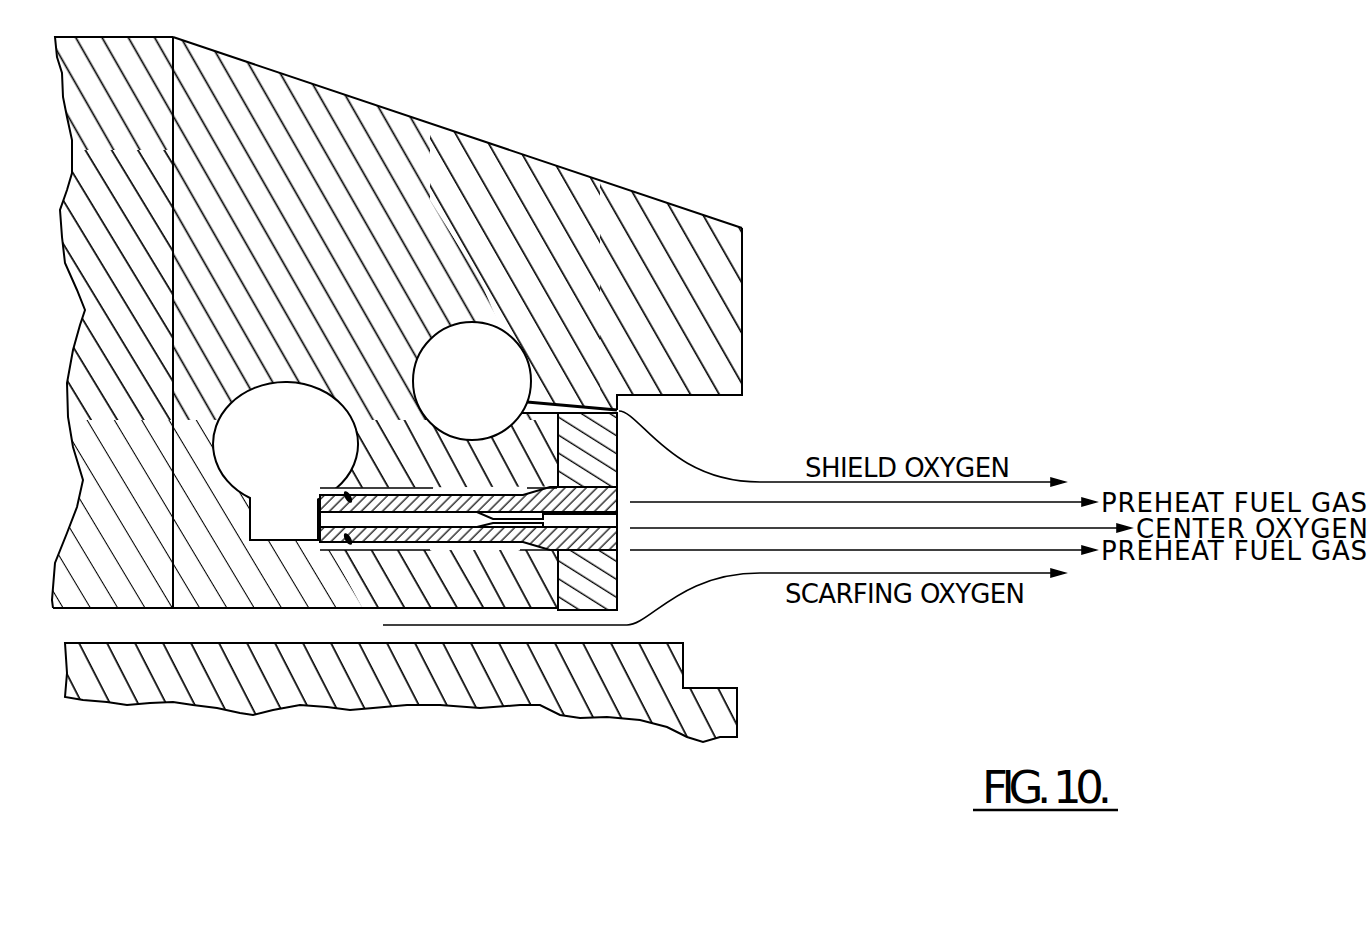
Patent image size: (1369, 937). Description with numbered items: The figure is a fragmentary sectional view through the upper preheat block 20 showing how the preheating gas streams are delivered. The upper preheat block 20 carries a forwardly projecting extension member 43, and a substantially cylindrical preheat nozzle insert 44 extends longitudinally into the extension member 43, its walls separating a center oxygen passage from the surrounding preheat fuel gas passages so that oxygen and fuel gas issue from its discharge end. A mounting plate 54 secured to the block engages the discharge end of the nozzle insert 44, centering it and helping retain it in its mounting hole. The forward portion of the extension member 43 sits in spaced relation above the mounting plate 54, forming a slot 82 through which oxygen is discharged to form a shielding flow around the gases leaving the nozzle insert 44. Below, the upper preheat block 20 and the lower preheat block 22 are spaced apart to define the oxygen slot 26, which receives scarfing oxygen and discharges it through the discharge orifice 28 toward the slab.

The upper preheat block 20 is at (505, 148).
The extension member 43 is at (672, 204).
The slot 82 is at (620, 412).
The mounting plate 54 is at (602, 455).
The preheat nozzle insert 44 is at (618, 540).
The oxygen slot 26 is at (317, 636).
The discharge orifice 28 is at (630, 636).
The lower preheat block 22 is at (740, 702).